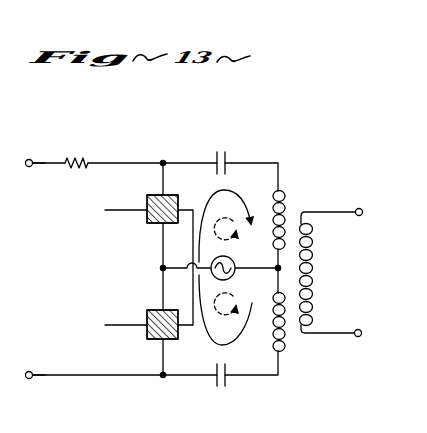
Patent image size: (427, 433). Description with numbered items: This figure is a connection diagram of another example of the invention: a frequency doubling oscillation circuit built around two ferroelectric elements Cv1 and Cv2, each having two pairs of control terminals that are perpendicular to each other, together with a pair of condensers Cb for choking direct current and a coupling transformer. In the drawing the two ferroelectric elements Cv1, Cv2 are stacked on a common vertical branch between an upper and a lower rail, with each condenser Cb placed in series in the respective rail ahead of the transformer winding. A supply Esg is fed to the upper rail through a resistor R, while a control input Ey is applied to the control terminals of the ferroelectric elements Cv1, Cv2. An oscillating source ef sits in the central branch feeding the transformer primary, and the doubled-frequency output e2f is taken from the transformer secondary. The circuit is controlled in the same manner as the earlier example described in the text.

The screen grid supply voltage Esg is at (14, 168).
The resistor R is at (76, 153).
The condenser for choking direct current Cb is at (220, 270).
The ferroelectric element Cv1 is at (151, 200).
The ferroelectric element Cv2 is at (147, 315).
The control voltage input Ey is at (95, 215).
The oscillator frequency voltage source ef is at (230, 267).
The double-frequency output voltage across secondary e2f is at (321, 271).